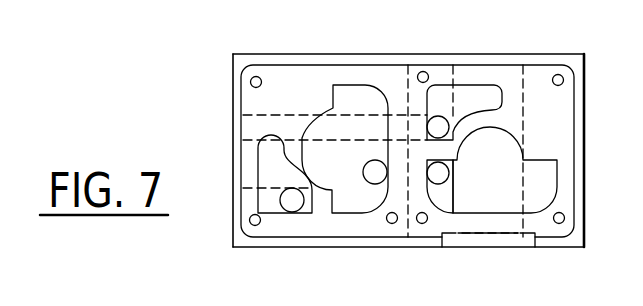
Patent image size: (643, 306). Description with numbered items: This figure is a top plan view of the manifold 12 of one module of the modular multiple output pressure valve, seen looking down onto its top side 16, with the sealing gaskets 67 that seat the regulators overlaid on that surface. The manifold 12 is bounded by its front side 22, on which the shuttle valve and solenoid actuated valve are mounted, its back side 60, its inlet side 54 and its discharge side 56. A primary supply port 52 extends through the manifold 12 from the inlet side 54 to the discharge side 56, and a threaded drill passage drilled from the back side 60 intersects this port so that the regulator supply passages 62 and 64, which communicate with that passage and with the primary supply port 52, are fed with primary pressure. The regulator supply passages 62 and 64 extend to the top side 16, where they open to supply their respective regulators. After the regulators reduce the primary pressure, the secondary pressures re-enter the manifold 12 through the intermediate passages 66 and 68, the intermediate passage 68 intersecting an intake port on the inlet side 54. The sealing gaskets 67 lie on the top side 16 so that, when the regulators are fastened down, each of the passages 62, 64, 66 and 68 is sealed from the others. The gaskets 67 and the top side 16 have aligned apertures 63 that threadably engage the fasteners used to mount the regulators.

The manifold 12 is at (592, 110).
The top side 16 is at (238, 58).
The front side 22 is at (233, 152).
The primary supply port 52 is at (490, 243).
The inlet side 54 is at (377, 246).
The discharge side 56 is at (308, 53).
The back side 60 is at (588, 193).
The regulator supply passage 62 is at (440, 173).
The apertures 63 is at (250, 82).
The regulator supply passage 64 is at (368, 168).
The intermediate passage 66 is at (437, 125).
The sealing gaskets 67 is at (322, 75).
The intermediate passage 68 is at (293, 203).